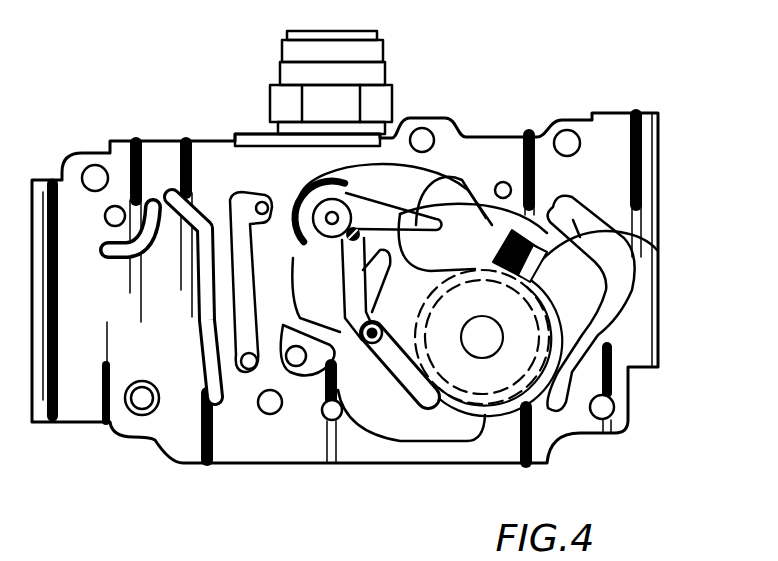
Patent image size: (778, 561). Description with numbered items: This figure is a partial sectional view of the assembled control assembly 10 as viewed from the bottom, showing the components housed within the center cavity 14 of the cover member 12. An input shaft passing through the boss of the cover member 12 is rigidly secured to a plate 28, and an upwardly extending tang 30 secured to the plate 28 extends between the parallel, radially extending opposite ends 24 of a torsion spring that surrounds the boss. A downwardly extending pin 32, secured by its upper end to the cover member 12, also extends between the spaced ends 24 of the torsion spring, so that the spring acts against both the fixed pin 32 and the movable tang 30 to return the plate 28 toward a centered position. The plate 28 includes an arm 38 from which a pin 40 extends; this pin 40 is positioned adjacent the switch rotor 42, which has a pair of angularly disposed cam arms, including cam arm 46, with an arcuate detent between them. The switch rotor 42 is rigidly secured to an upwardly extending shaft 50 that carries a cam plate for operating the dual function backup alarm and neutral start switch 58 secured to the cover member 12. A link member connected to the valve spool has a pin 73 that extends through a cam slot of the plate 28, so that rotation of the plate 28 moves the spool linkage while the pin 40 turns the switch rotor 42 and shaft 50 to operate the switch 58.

The control assembly 10 is at (622, 73).
The cover member 12 is at (512, 135).
The center cavity 14 is at (656, 245).
The opposite ends 24 is at (510, 237).
The plate 28 is at (487, 270).
The tang 30 is at (557, 202).
The pin 32 is at (538, 270).
The arm 38 is at (360, 210).
The pin 40 is at (353, 267).
The switch rotor 42 is at (305, 185).
The cam arm 46 is at (450, 178).
The shaft 50 is at (303, 247).
The neutral start switch 58 is at (377, 47).
The pin 73 is at (362, 331).